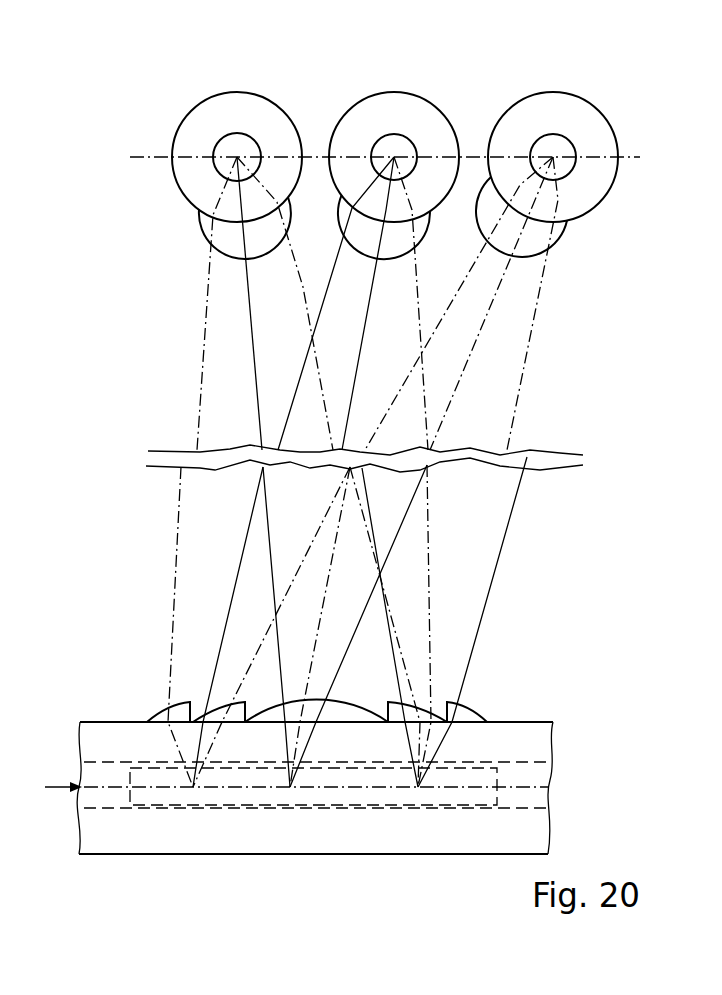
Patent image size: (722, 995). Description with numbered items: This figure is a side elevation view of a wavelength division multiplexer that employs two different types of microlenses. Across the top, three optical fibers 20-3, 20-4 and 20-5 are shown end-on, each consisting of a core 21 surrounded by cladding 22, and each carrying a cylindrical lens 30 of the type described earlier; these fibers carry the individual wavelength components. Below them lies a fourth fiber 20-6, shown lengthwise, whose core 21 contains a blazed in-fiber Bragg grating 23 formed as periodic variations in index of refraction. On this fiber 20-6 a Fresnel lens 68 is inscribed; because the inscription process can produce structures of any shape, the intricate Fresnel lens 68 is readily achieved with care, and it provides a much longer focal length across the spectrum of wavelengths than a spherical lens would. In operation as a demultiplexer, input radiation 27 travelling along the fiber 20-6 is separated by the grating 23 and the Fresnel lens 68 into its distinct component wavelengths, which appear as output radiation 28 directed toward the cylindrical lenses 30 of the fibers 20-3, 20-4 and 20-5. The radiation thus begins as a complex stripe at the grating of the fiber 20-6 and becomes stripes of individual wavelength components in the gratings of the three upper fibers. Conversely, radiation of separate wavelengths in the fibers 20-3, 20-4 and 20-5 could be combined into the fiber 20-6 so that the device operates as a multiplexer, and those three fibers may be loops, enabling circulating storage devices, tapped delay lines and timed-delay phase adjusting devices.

The fiber 20-3 is at (186, 111).
The fiber 20-4 is at (341, 113).
The fiber 20-5 is at (633, 86).
The fiber 20-6 is at (485, 858).
The core 21 is at (533, 777).
The cladding 22 is at (533, 830).
The in-fiber Bragg grating 23 is at (165, 806).
The input radiation 27 is at (55, 810).
The output radiation 28 is at (453, 378).
The cylindrical lens 30 is at (205, 218).
The Fresnel lens 68 is at (470, 700).